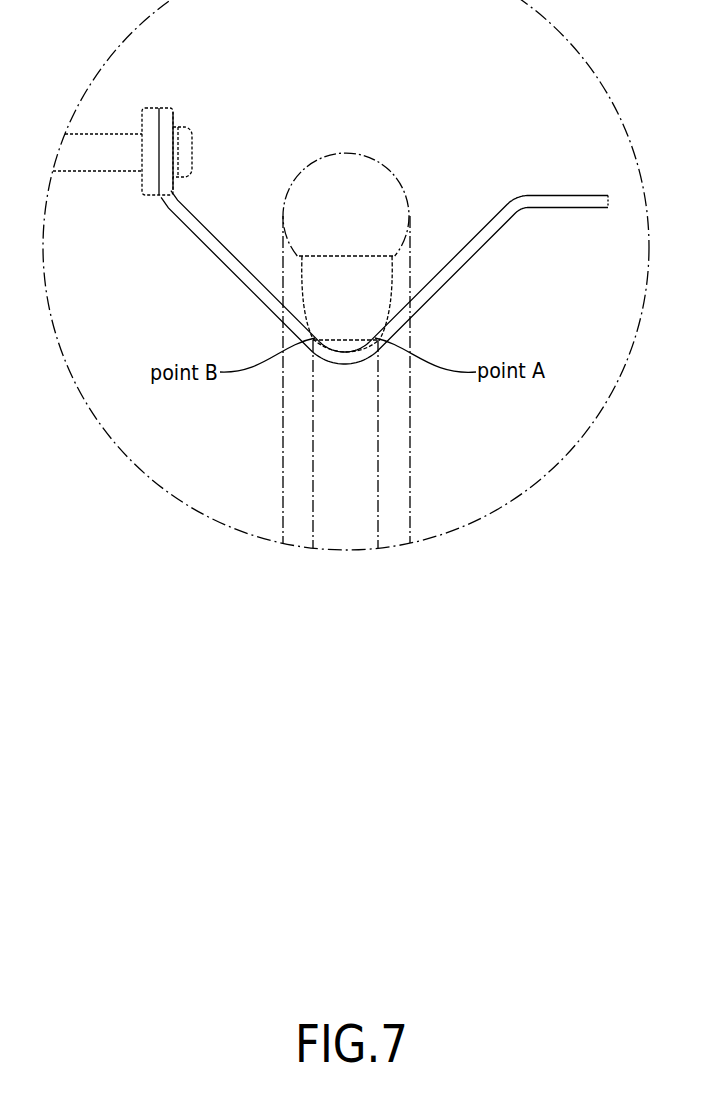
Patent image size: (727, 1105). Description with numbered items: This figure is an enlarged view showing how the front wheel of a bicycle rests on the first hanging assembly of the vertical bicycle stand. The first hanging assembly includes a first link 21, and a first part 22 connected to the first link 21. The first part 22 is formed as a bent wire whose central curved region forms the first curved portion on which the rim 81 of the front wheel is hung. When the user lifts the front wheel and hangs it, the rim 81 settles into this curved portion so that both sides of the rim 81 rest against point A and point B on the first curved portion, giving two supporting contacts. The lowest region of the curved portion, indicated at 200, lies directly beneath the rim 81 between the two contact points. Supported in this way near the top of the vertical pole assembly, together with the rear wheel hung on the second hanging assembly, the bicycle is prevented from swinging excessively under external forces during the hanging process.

The first link 21 is at (104, 143).
The first part 22 is at (446, 206).
The rim 81 is at (303, 273).
The contact portion of the wire 200 is at (345, 357).